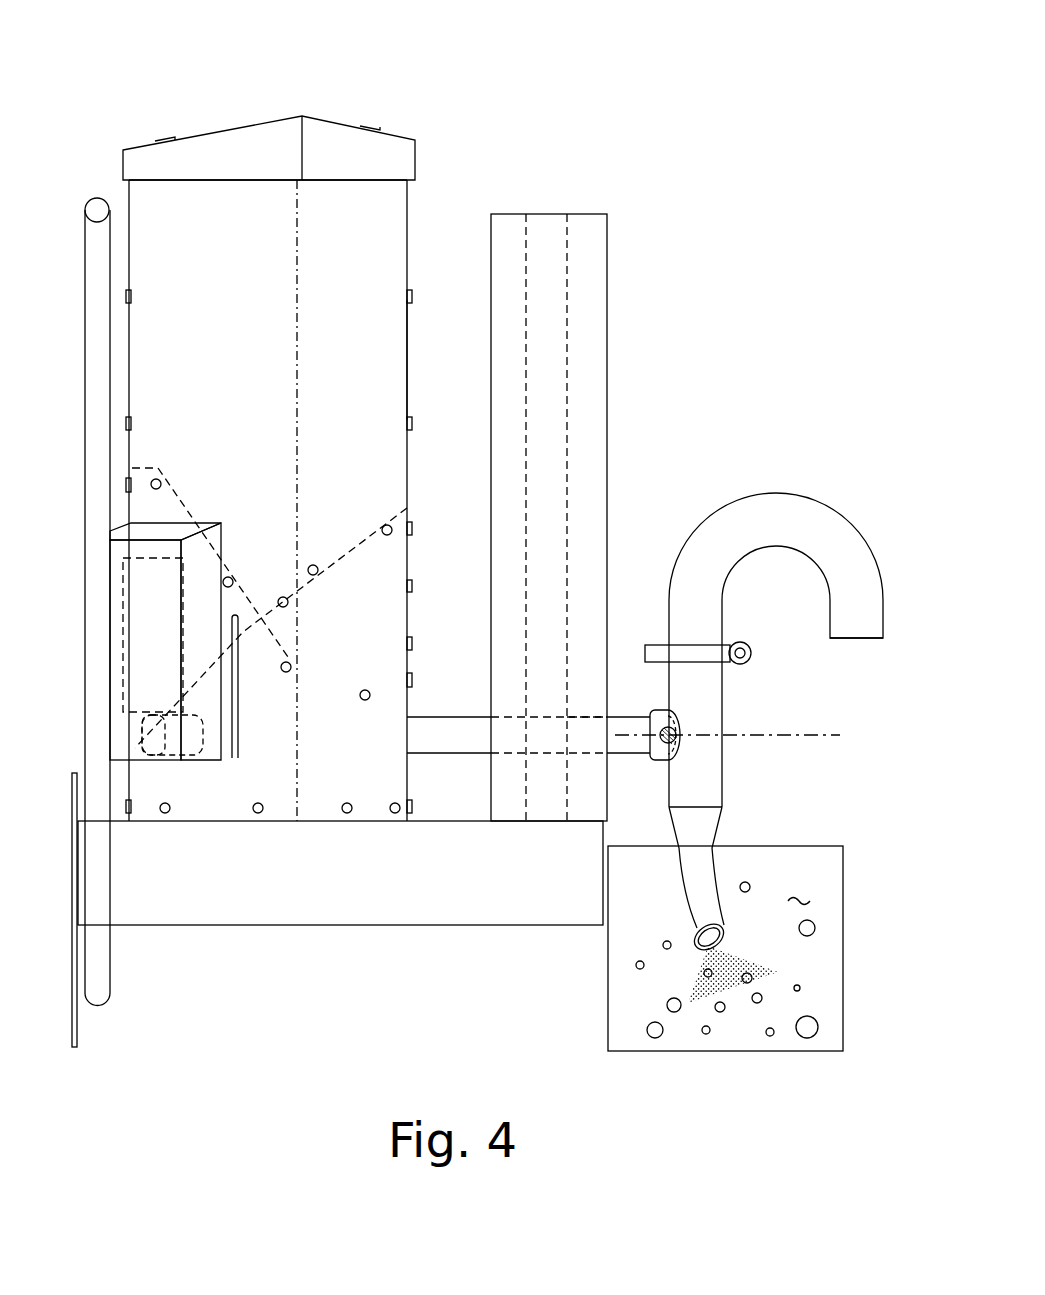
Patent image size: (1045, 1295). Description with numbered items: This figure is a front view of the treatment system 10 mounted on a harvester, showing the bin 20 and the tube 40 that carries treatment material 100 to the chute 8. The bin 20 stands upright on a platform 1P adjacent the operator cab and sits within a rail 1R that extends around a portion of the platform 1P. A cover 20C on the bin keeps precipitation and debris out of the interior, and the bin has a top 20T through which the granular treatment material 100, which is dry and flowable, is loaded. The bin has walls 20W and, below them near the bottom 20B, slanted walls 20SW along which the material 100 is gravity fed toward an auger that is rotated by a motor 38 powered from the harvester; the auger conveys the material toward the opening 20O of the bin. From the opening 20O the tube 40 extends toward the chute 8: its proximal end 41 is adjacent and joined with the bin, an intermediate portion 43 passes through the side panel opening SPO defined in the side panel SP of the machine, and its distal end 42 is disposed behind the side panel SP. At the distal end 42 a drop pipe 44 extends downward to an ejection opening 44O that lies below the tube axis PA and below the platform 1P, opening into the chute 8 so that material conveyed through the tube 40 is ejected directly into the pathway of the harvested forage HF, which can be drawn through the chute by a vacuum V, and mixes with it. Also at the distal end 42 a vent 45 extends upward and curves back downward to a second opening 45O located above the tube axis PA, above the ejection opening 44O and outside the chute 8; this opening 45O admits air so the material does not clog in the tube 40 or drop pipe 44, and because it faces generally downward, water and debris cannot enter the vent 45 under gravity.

The system 10 is at (403, 88).
The cover 20C is at (190, 135).
The bin 20 is at (124, 193).
The top 20T is at (407, 195).
The walls 20W is at (407, 358).
The rail 1R is at (85, 260).
The platform 1P is at (72, 890).
The motor 38 is at (140, 628).
The slanted walls 20SW is at (242, 585).
The bottom 20B is at (368, 695).
The treatment material 100 is at (355, 285).
The opening 20O is at (352, 753).
The proximal end 41 is at (420, 717).
The intermediate portion 43 is at (535, 730).
The tube 40 is at (551, 768).
The side panel SP is at (575, 502).
The side panel opening SPO is at (583, 718).
The distal end 42 is at (655, 712).
The tube axis PA is at (748, 736).
The vent 45 is at (873, 560).
The second opening 45O is at (883, 641).
The drop pipe 44 is at (713, 887).
The ejection opening 44O is at (723, 928).
The chute 8 is at (843, 915).
The vacuum V is at (799, 889).
The harvested forage HF is at (667, 1030).